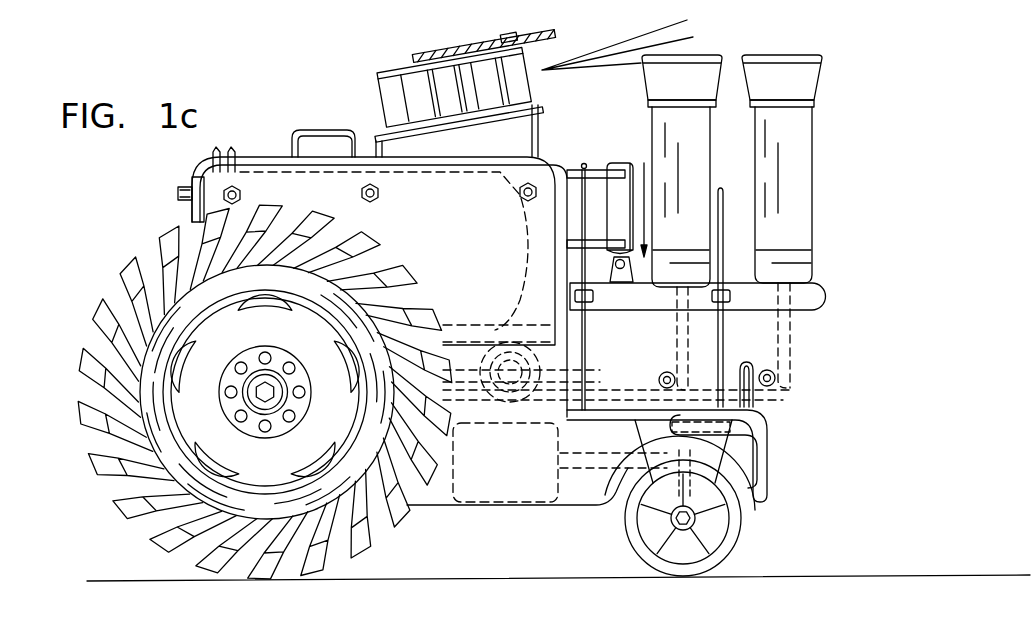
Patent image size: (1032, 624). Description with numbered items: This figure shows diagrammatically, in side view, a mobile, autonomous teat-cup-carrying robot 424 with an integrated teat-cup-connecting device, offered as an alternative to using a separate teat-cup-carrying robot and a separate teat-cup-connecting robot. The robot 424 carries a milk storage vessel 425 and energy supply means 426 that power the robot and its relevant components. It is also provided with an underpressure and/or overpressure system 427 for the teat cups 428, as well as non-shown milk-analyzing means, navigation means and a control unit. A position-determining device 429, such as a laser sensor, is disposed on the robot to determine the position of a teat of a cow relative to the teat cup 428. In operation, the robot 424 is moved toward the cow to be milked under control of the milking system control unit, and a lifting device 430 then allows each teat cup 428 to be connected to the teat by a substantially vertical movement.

The mobile autonomous teat-cup-carrying robot 424 is at (877, 463).
The milk storage vessel 425 is at (493, 243).
The energy supply means 426 is at (218, 187).
The underpressure and/or overpressure system 427 is at (510, 387).
The teat cups 428 is at (784, 78).
The position-determining device 429 is at (471, 90).
The lifting device 430 is at (598, 313).